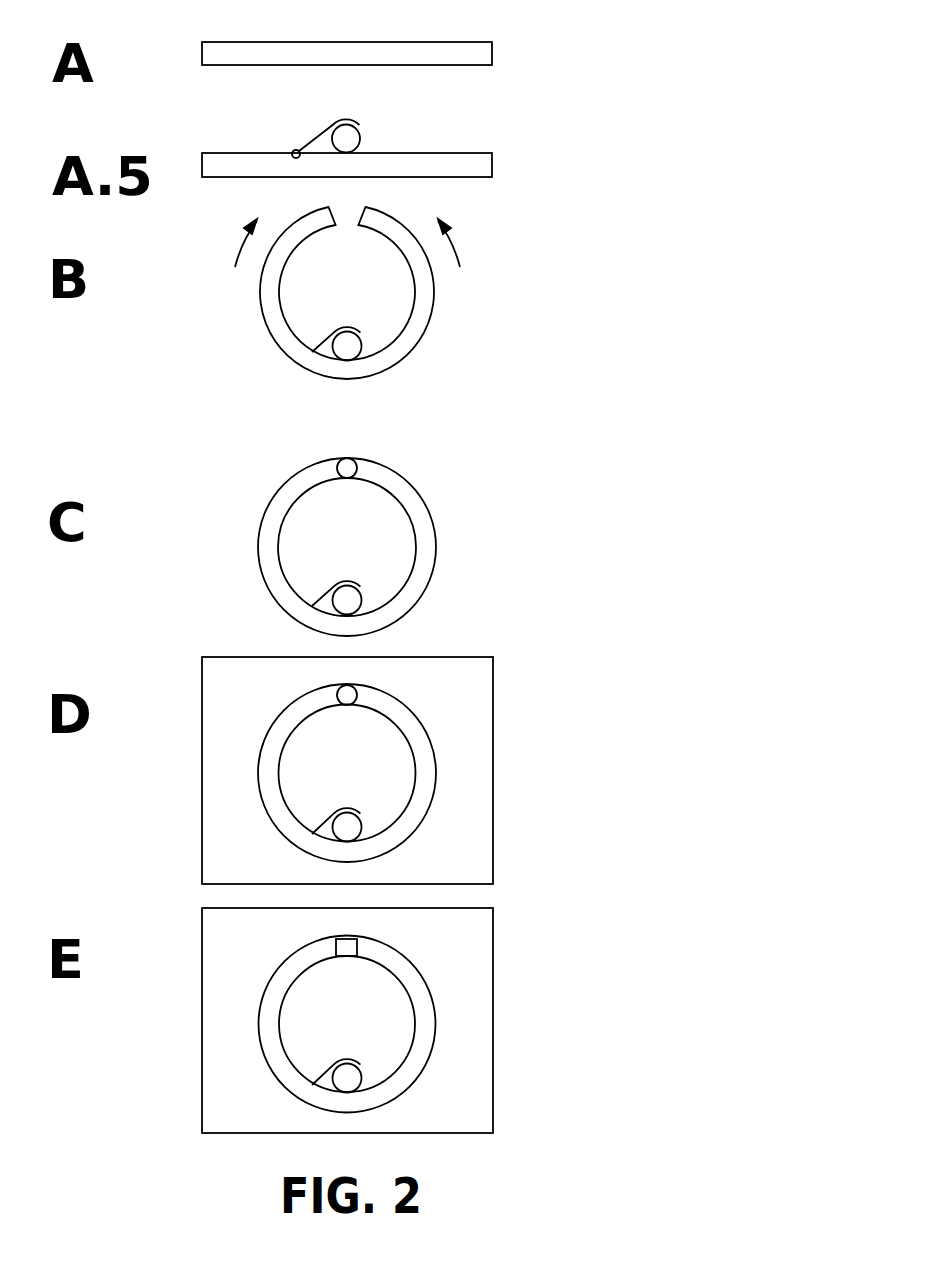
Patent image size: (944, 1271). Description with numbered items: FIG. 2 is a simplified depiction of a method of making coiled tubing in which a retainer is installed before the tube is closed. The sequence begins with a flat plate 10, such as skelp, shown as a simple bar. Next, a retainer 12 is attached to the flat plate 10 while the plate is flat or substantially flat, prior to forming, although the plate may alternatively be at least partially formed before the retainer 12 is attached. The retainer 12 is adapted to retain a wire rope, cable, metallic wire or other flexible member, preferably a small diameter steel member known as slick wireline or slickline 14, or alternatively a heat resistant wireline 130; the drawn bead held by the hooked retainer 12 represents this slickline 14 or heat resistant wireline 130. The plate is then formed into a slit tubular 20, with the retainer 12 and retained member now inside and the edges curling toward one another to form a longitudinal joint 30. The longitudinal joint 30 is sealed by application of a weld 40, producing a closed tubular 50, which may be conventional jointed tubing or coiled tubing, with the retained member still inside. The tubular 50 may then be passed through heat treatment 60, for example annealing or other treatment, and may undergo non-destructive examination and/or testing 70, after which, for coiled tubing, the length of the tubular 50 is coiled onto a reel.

The flat plate 10 is at (492, 52).
The retainer 12 is at (330, 128).
The slickline 14 is at (346, 139).
The heat resistant wireline 130 is at (491, 614).
The slit tubular 20 is at (463, 295).
The longitudinal joint 30 is at (350, 455).
The weld 40 is at (296, 150).
The tubular 50 is at (427, 550).
The heat treatment 60 is at (477, 733).
The non-destructive examination and/or testing 70 is at (477, 983).